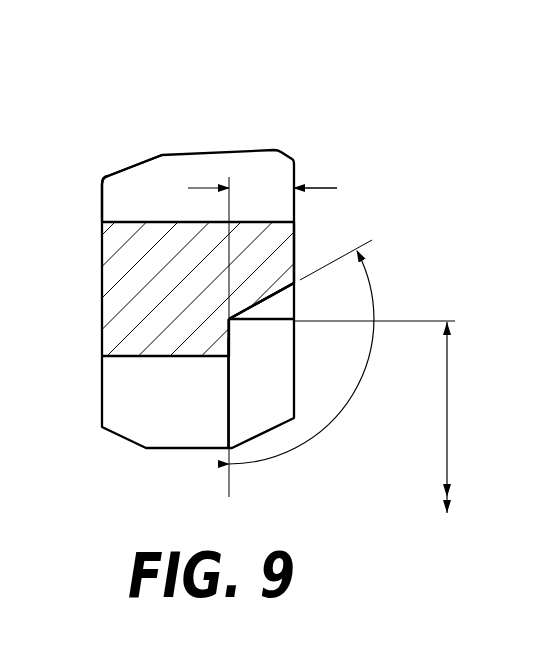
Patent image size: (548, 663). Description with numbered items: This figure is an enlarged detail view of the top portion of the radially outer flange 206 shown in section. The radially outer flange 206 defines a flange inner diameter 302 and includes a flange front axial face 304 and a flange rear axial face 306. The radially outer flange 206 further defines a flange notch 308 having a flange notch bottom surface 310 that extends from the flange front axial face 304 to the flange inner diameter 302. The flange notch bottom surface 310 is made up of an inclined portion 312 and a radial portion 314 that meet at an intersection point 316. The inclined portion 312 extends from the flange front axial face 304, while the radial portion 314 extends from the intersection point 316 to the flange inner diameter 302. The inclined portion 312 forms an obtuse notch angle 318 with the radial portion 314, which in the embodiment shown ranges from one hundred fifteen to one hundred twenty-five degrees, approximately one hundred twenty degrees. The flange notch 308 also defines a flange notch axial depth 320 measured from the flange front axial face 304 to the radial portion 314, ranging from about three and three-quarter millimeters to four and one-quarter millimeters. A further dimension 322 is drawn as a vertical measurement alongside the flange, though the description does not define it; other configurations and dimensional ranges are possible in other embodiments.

The radially outer flange 206 is at (222, 97).
The flange inner diameter 302 is at (113, 376).
The flange front axial face 304 is at (295, 173).
The flange rear axial face 306 is at (101, 205).
The flange notch 308 is at (239, 387).
The flange notch bottom surface 310 is at (236, 308).
The inclined portion 312 is at (283, 290).
The radial portion 314 is at (229, 337).
The intersection point 316 is at (229, 319).
The obtuse notch angle 318 is at (357, 398).
The flange notch axial depth 320 is at (337, 189).
The bore depth 322 is at (447, 425).